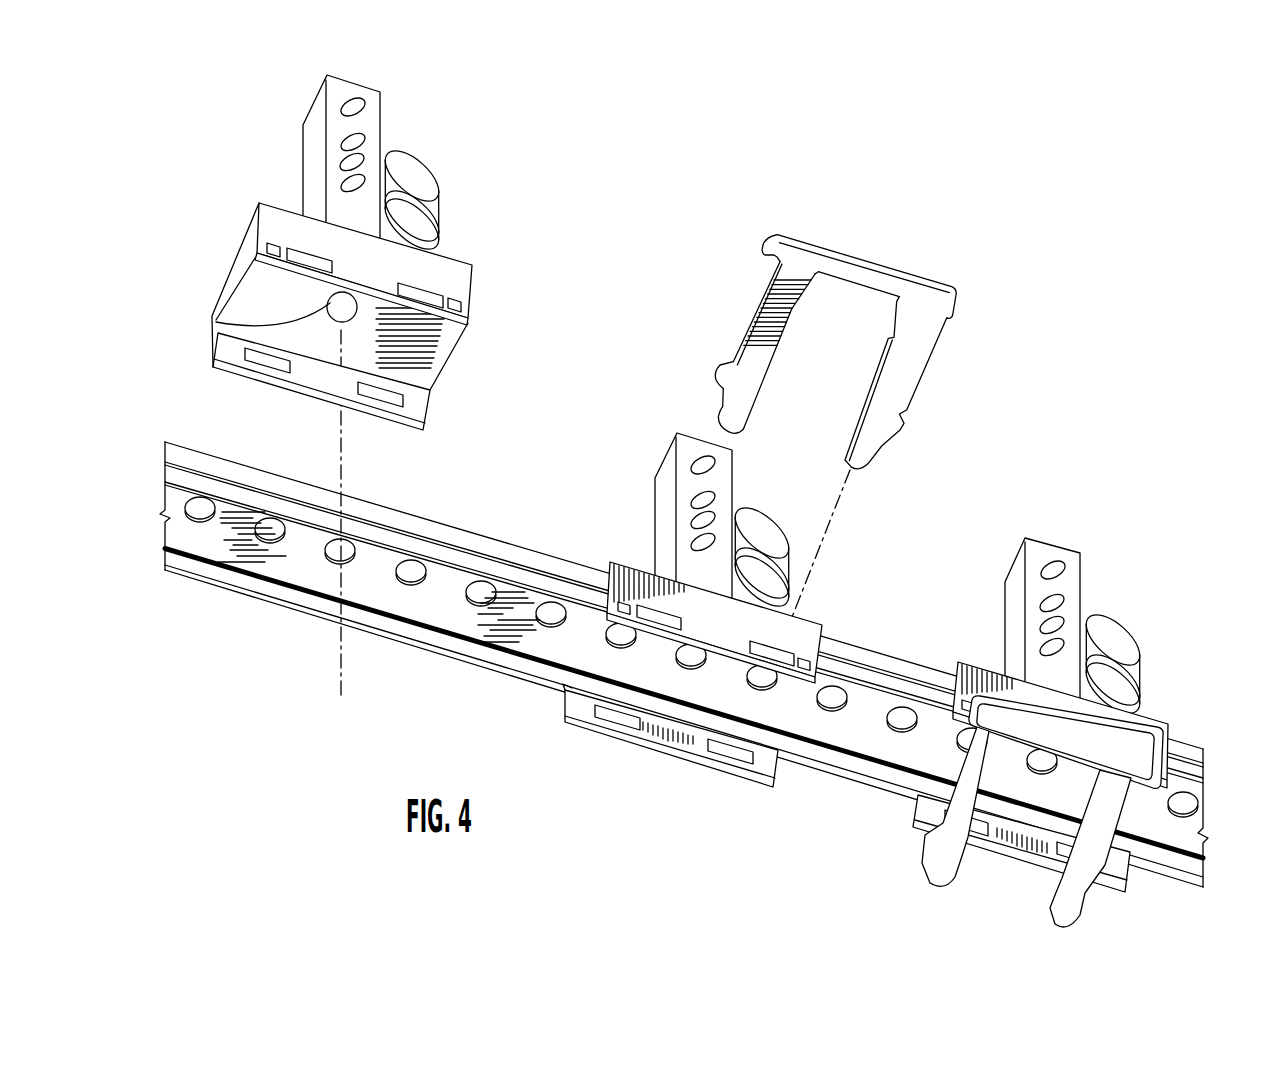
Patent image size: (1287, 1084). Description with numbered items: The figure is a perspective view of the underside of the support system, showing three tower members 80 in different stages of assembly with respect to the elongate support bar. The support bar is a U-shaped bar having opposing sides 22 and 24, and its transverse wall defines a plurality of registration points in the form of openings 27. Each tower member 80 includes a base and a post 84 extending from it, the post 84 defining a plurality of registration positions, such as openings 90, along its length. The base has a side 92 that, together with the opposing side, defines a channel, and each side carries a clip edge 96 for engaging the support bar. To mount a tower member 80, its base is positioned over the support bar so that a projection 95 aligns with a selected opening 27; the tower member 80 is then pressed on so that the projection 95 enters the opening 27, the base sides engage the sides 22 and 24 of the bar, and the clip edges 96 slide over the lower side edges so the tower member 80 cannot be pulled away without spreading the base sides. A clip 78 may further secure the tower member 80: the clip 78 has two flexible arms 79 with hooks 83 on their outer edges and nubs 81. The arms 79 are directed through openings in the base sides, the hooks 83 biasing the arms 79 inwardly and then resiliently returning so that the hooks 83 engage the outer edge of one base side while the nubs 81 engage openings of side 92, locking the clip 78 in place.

The side 22 is at (163, 562).
The side 24 is at (205, 462).
The opening 27 is at (263, 533).
The clip 78 is at (980, 265).
The flexible arm 79 is at (913, 378).
The tower member 80 is at (274, 128).
The nub 81 is at (766, 262).
The hook 83 is at (718, 362).
The post 84 is at (386, 125).
The opening 90 is at (352, 103).
The side 92 is at (272, 220).
The projection 95 is at (328, 305).
The clip edge 96 is at (257, 228).